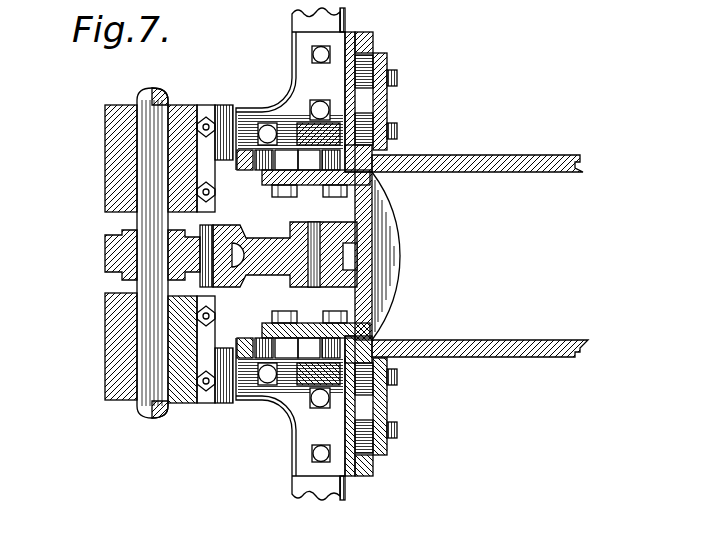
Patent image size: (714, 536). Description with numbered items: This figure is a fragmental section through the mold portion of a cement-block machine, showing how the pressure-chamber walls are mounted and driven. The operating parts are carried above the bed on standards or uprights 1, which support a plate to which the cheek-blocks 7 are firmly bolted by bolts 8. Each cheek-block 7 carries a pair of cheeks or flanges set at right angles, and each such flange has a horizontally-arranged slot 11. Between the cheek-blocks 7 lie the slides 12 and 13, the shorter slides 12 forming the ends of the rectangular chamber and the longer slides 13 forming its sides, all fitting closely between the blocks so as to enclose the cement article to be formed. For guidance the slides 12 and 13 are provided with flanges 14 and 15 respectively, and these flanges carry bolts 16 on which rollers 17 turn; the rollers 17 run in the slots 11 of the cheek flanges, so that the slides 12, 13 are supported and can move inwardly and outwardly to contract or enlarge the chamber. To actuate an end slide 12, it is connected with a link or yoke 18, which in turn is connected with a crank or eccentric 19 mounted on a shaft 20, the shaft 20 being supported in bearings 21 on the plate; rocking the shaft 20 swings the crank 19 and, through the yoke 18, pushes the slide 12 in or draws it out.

The standard or upright 1 is at (346, 22).
The cheek-block 7 is at (288, 398).
The bolt 8 is at (310, 56).
The slot 11 is at (318, 253).
The slide 12 is at (360, 286).
The slide 13 is at (466, 157).
The flange 14 is at (300, 190).
The flange 15 is at (390, 110).
The bolt 16 is at (398, 76).
The roller 17 is at (352, 68).
The link or yoke 18 is at (270, 281).
The crank or eccentric 19 is at (105, 259).
The shaft 20 is at (150, 222).
The bearing 21 is at (105, 168).